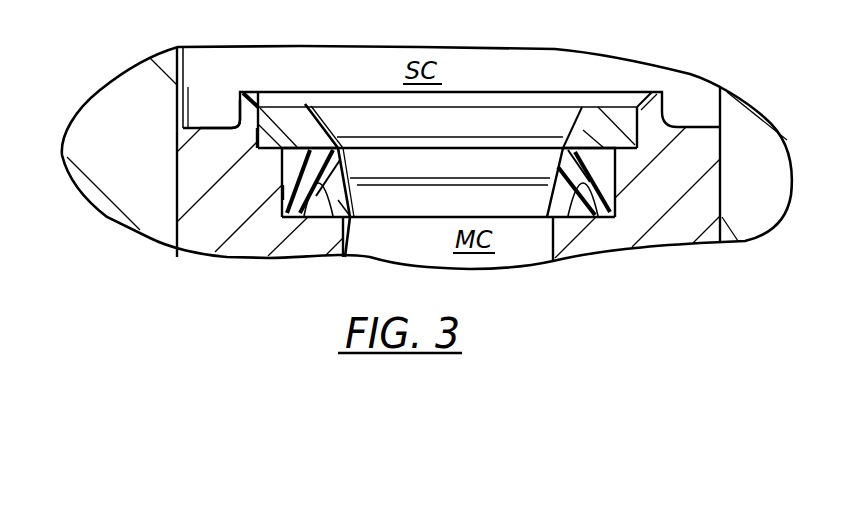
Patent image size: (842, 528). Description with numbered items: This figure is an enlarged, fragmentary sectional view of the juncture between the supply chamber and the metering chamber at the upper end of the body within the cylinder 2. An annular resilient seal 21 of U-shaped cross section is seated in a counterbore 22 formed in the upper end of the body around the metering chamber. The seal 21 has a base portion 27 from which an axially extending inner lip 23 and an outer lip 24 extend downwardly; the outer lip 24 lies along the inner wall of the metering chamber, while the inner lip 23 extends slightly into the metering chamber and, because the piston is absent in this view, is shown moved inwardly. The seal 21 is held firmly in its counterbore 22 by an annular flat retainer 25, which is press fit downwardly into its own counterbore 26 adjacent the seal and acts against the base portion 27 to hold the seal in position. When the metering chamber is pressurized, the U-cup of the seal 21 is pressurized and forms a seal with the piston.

The cylinder 2 is at (137, 73).
The annular resilient seal 21 is at (282, 179).
The counterbore 22 is at (320, 214).
The inner lip 23 is at (348, 216).
The outer lip 24 is at (278, 192).
The annular flat retainer 25 is at (288, 118).
The counterbore 26 is at (258, 145).
The base portion 27 is at (257, 141).